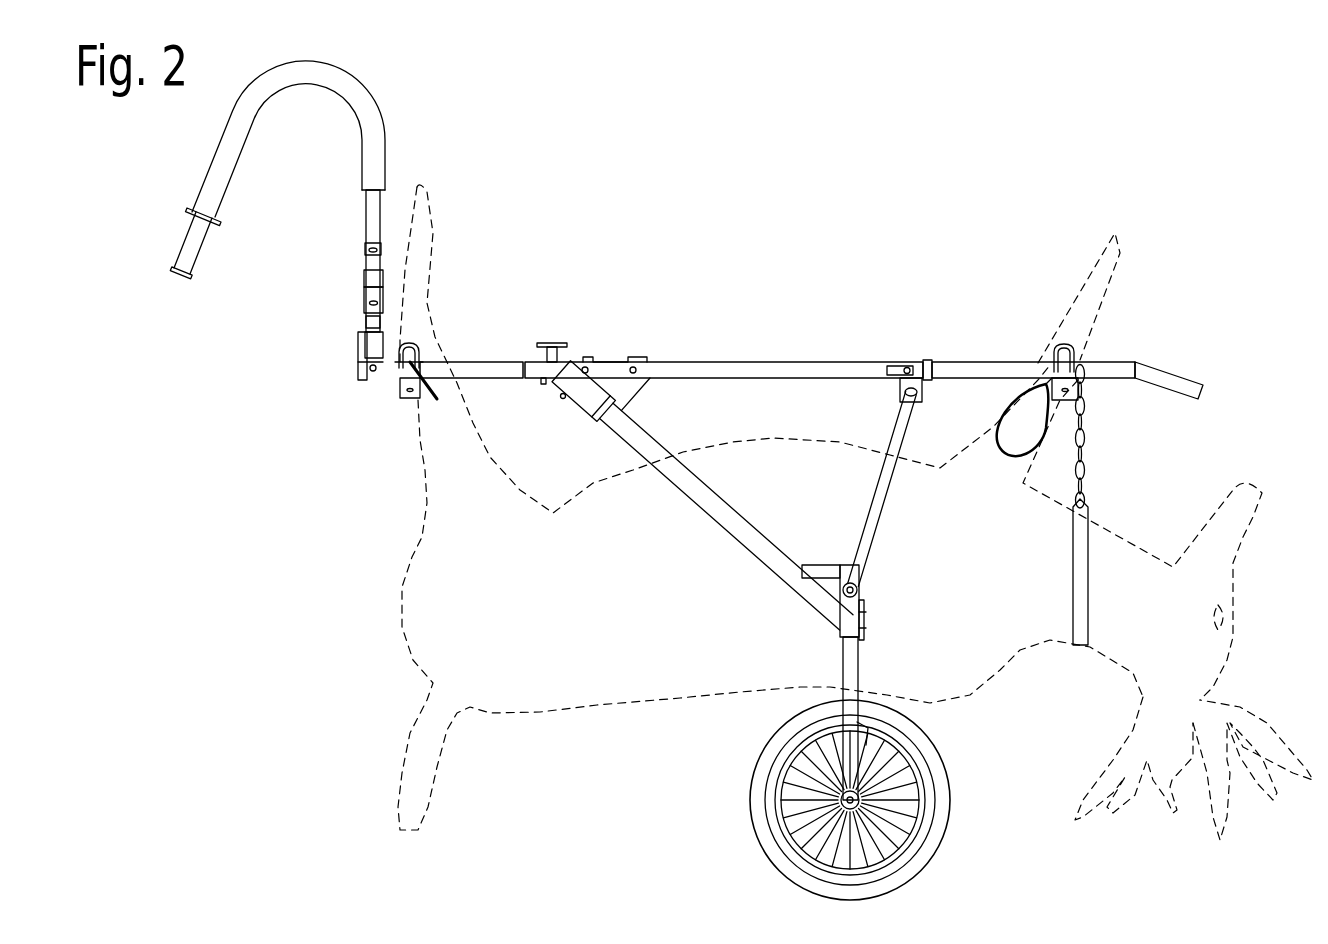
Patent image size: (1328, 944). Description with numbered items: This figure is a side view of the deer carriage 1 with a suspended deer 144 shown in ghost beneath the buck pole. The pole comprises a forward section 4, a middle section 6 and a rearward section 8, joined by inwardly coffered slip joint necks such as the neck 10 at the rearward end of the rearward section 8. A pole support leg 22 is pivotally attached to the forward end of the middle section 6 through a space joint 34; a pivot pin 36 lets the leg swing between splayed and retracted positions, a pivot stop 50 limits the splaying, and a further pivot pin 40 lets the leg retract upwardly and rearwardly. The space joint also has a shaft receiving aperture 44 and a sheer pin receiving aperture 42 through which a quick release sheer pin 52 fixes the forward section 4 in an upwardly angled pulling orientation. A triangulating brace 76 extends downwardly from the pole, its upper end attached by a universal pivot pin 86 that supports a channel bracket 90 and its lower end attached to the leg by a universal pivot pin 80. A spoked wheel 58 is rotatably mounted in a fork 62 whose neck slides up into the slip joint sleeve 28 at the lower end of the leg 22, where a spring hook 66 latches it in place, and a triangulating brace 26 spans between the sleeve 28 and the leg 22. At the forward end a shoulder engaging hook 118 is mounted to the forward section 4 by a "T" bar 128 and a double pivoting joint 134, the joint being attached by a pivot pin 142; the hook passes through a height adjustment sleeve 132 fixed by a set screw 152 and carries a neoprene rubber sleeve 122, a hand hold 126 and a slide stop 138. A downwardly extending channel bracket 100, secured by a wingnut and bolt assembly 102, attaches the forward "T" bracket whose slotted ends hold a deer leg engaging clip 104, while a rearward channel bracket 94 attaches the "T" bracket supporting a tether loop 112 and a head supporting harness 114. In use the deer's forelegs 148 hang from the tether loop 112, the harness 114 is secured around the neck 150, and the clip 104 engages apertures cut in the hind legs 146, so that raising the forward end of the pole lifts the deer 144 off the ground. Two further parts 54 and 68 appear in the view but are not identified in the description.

The carriage 1 is at (677, 480).
The forward section 4 is at (470, 368).
The middle section 6 is at (775, 364).
The rearward section 8 is at (972, 370).
The slip joint neck 10 is at (1157, 382).
The left pole support leg 22 is at (777, 363).
The left triangulating brace 26 is at (818, 572).
The slip joint sleeve 28 is at (850, 610).
The space joint 34 is at (655, 392).
The pivot pin 36 is at (562, 398).
The pivot pin 40 is at (588, 368).
The sheer pin receiving aperture 42 is at (640, 370).
The shaft receiving aperture 44 is at (613, 357).
The pivot stop 50 is at (602, 420).
The quick release sheer pin 52 is at (546, 343).
The locking pin 54 is at (898, 364).
The left wheel 58 is at (760, 800).
The left wheel receiving fork 62 is at (852, 682).
The left spring hook 66 is at (860, 625).
The axle bracket 68 is at (866, 740).
The left triangulating brace 76 is at (895, 447).
The universal pivot pin 80 is at (858, 592).
The universal pivot pin 86 is at (917, 398).
The channel bracket 90 is at (915, 385).
The channel bracket 94 is at (1065, 377).
The channel bracket 100 is at (400, 370).
The wingnut and bolt assembly 102 is at (410, 385).
The deer leg engaging clip 104 is at (410, 398).
The deer leg engaging tether loop 112 is at (1044, 388).
The deer head supporting harness 114 is at (1082, 580).
The left shoulder engaging hook 118 is at (372, 202).
The neoprene rubber sleeve 122 is at (227, 163).
The left hand hold 126 is at (200, 250).
The "T" bar 128 is at (368, 277).
The left height adjustment sleeve 132 is at (368, 248).
The double pivoting joint 134 is at (362, 361).
The left slide stop 138 is at (363, 333).
The pivot pin 142 is at (368, 368).
The deer 144 is at (657, 730).
The hind legs 146 is at (437, 345).
The forelegs 148 is at (1090, 298).
The neck 150 is at (1107, 577).
The set screw 152 is at (368, 305).